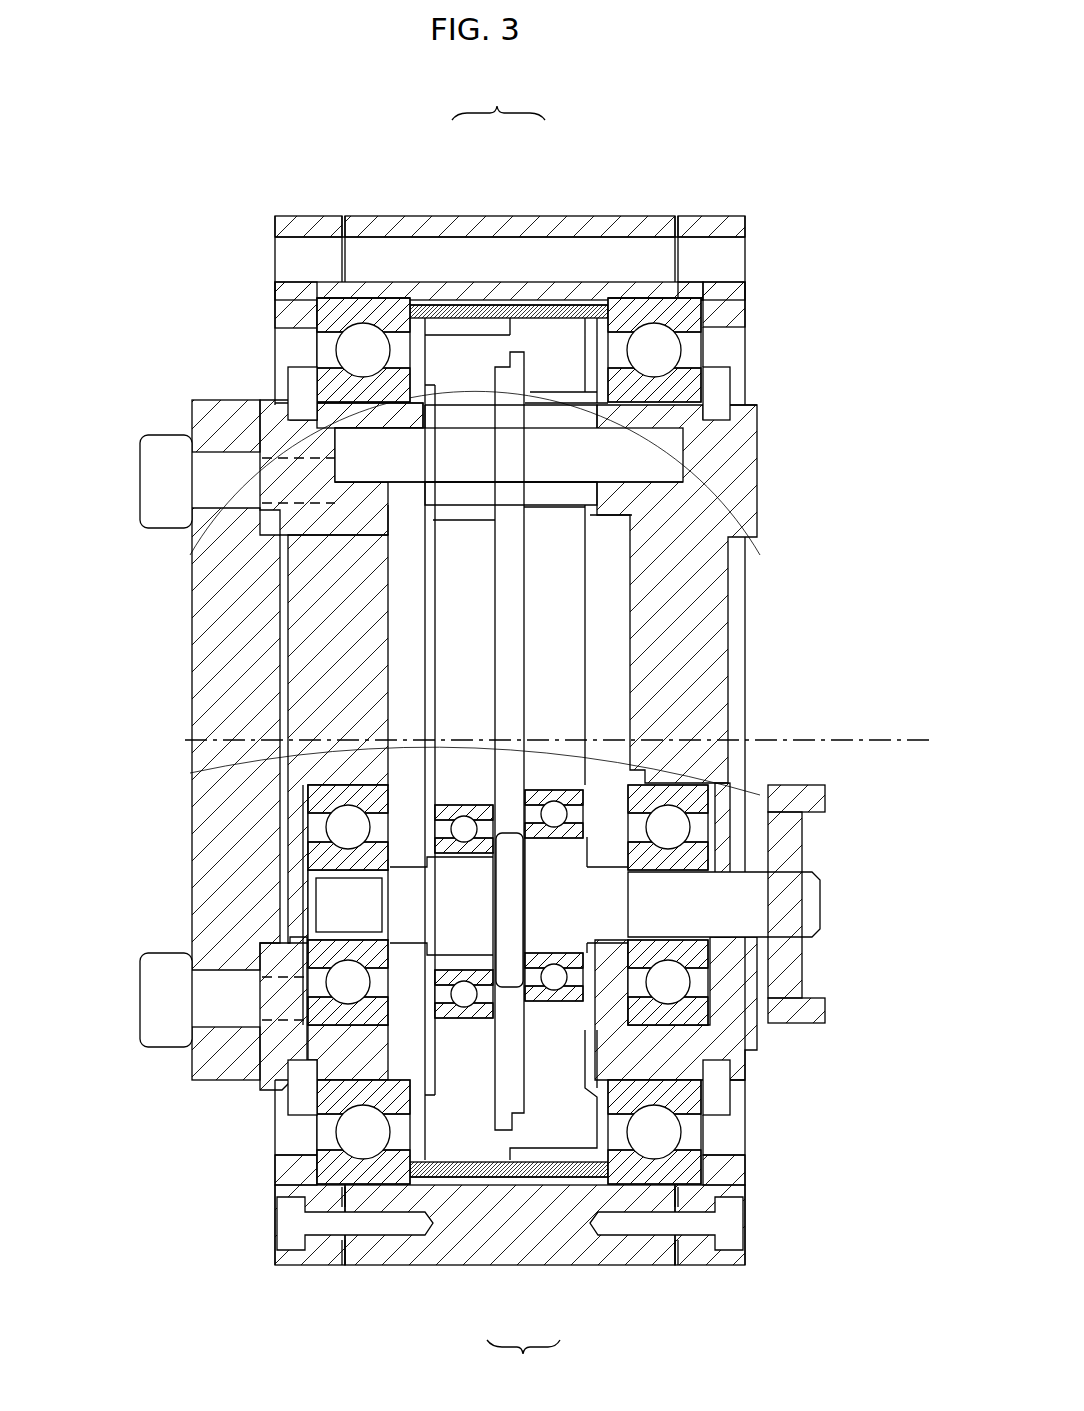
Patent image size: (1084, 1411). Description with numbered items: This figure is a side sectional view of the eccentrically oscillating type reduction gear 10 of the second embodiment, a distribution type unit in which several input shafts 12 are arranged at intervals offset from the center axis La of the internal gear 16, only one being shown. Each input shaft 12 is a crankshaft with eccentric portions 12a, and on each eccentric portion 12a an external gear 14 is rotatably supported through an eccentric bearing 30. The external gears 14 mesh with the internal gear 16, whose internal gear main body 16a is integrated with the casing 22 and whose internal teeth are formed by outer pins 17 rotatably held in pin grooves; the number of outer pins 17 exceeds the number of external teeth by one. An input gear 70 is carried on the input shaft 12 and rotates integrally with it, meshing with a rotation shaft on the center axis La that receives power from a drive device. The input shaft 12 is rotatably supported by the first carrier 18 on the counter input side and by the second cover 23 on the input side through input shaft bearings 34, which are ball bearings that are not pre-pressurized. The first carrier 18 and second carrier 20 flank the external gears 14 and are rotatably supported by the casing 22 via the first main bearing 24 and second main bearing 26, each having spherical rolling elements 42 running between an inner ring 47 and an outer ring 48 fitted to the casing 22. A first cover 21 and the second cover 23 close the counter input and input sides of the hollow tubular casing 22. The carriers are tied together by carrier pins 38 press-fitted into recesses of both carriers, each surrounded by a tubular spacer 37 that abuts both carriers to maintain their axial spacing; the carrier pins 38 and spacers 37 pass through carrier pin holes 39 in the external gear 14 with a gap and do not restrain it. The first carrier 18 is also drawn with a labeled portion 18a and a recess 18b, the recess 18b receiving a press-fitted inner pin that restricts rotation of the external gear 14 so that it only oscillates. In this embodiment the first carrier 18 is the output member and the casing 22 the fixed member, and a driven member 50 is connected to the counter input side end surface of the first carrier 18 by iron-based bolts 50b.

The eccentrically oscillating type reduction gear 10 is at (703, 140).
The input shaft 12 is at (808, 908).
The eccentric portion 12a is at (455, 965).
The external gear 14 is at (453, 350).
The internal gear 16 is at (506, 729).
The internal gear main body 16a is at (487, 305).
The outer pin 17 is at (548, 305).
The first carrier 18 is at (278, 443).
The bolt head opening 18a is at (378, 432).
The recess 18b is at (630, 482).
The second carrier 20 is at (700, 500).
The first cover 21 is at (300, 216).
The casing 22 is at (405, 218).
The second cover 23 is at (718, 216).
The first main bearing 24 is at (292, 347).
The second main bearing 26 is at (730, 347).
The eccentric bearing 30 is at (565, 790).
The input shaft bearing 34 is at (715, 790).
The spacer 37 is at (545, 495).
The carrier pin 38 is at (668, 455).
The carrier pin hole 39 is at (555, 432).
The rolling element 42 is at (360, 350).
The inner ring 47 is at (300, 372).
The outer ring 48 is at (335, 302).
The driven member 50 is at (200, 642).
The bolt 50b is at (145, 480).
The input gear 70 is at (800, 985).
The center axis La is at (890, 740).